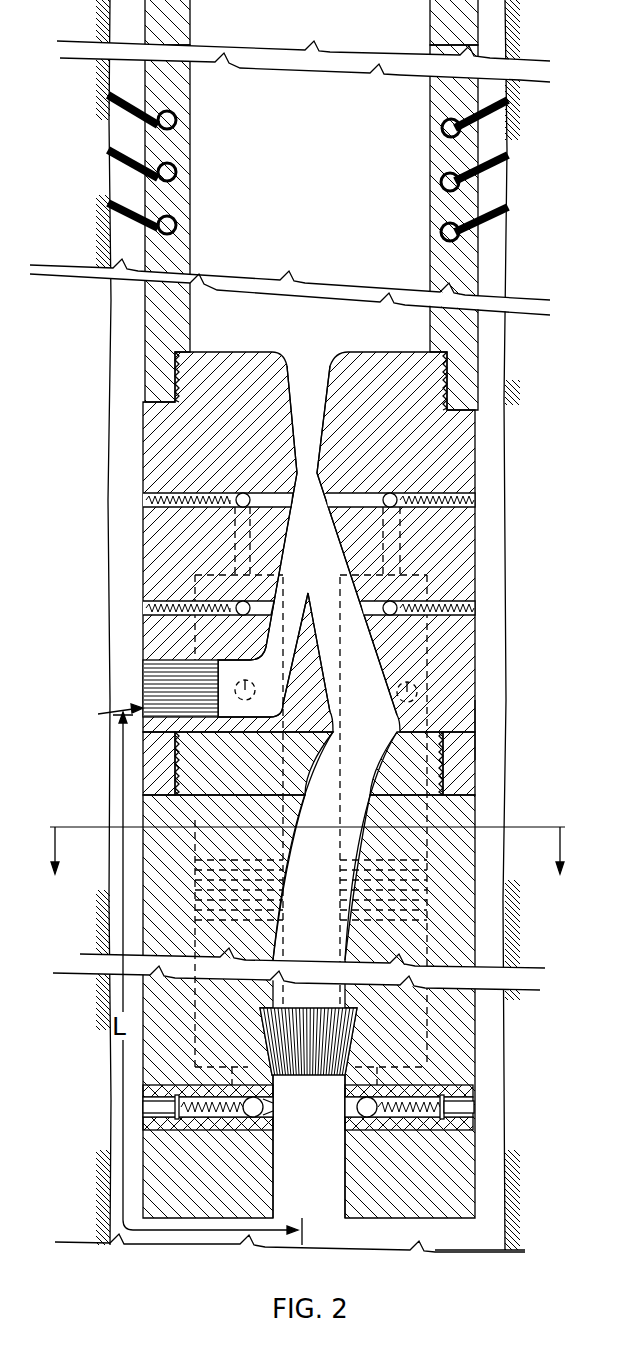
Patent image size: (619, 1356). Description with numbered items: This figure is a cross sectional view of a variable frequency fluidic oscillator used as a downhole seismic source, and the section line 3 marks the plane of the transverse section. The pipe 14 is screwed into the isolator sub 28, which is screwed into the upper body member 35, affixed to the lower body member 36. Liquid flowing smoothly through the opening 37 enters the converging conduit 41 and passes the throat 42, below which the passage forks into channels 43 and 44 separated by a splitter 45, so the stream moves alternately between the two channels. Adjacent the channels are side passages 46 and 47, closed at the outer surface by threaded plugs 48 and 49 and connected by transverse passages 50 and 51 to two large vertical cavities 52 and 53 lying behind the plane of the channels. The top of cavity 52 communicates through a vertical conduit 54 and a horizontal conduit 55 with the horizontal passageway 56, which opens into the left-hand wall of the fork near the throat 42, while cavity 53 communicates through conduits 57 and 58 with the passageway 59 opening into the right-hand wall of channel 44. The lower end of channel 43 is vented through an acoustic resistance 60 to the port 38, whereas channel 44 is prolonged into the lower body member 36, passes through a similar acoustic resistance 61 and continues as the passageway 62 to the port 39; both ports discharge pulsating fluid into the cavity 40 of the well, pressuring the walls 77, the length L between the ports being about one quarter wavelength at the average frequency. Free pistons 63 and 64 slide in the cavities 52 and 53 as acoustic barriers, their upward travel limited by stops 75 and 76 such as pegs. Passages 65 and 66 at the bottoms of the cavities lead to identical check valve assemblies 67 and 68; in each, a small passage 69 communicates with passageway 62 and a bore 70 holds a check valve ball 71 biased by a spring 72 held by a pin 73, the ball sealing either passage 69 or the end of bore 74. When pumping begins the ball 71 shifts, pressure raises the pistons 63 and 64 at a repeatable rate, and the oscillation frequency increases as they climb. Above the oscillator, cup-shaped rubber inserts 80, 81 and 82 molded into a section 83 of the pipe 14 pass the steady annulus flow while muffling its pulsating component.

The section line 3- 3 is at (307, 865).
The pipe 14 is at (465, 32).
The isolator sub 28 is at (465, 96).
The upper body member 35 is at (463, 427).
The lower body member 36 is at (463, 873).
The opening 37 is at (323, 181).
The port 38 is at (105, 713).
The port 39 is at (348, 1222).
The cavity of the well 40 is at (440, 1243).
The converging conduit 41 is at (326, 401).
The throat 42 is at (327, 468).
The channel 43 is at (282, 681).
The channel 44 is at (378, 711).
The splitter 45 is at (307, 655).
The side passage 46 is at (237, 574).
The side passage 47 is at (410, 590).
The threaded plug 48 is at (240, 612).
The threaded plug 49 is at (408, 608).
The transverse passage 50 is at (232, 607).
The transverse passage 51 is at (395, 622).
The cavity 52 is at (223, 757).
The cavity 53 is at (403, 783).
The vertical conduit 54 is at (225, 533).
The horizontal conduit 55 is at (240, 496).
The horizontal passageway 56 is at (277, 495).
The conduit 57 is at (390, 547).
The conduit 58 is at (410, 519).
The passageway 59 is at (395, 492).
The acoustic resistance 60 is at (160, 688).
The acoustic resistance 61 is at (347, 1038).
The passageway 62 is at (320, 1184).
The free piston 63 is at (235, 850).
The free piston 64 is at (390, 883).
The passage 65 is at (243, 1083).
The passage 66 is at (383, 1080).
The check valve assembly 67 is at (230, 1128).
The check valve assembly 68 is at (448, 1133).
The small passage 69 is at (281, 1116).
The bore 70 is at (440, 1090).
The check valve ball 71 is at (252, 1094).
The spring 72 is at (236, 1130).
The pin 73 is at (245, 1092).
The bore 74 is at (152, 1106).
The stop 75 is at (243, 680).
The stop 76 is at (416, 692).
The walls of the well 77 is at (473, 727).
The cup-shaped rubber insert 80 is at (478, 212).
The cup-shaped rubber insert 81 is at (490, 178).
The cup-shaped rubber insert 82 is at (490, 131).
The section of the pipe 83 is at (465, 262).